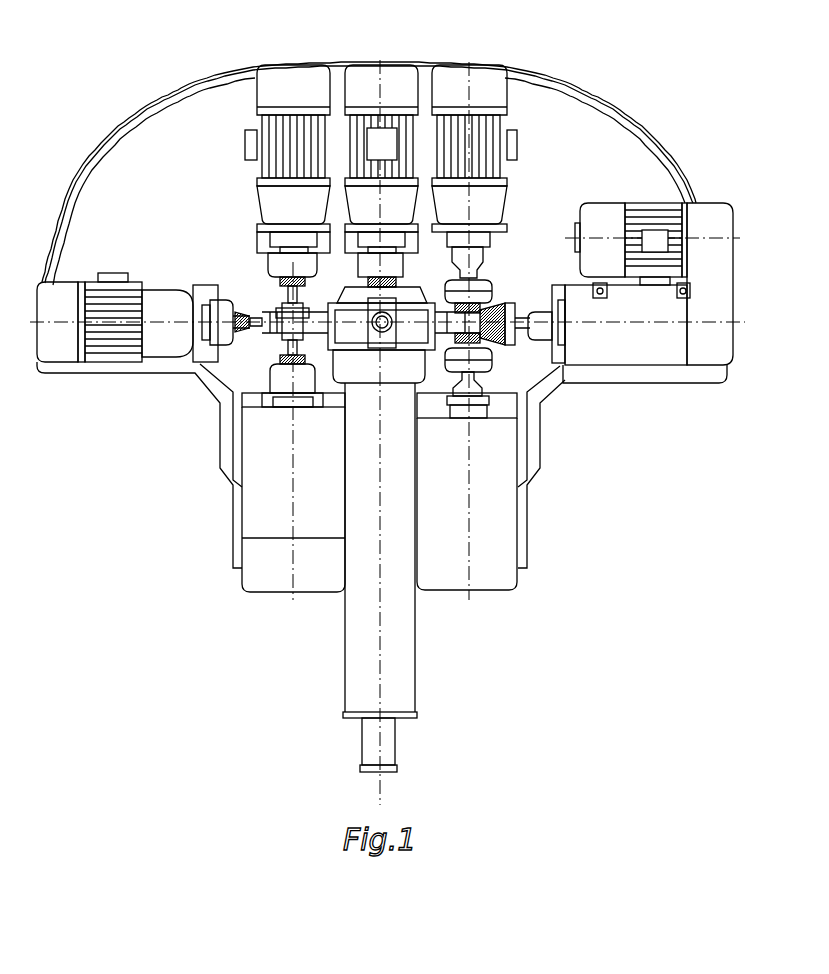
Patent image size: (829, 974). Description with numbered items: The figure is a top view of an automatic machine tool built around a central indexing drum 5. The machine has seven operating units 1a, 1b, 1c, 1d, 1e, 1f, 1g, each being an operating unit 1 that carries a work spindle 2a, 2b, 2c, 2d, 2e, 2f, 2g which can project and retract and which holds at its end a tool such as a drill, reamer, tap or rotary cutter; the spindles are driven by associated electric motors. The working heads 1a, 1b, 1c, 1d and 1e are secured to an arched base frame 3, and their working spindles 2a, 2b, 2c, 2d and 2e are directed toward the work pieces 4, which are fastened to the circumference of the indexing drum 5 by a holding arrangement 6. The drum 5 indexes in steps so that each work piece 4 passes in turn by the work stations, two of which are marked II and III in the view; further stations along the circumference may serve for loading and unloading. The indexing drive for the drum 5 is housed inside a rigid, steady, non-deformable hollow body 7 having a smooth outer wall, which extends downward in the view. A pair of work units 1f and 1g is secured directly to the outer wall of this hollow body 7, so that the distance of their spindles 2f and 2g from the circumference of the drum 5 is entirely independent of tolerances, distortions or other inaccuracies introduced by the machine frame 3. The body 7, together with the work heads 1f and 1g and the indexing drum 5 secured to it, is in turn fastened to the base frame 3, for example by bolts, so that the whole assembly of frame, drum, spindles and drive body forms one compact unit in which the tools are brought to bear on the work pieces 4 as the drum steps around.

The operating unit 1 is at (130, 288).
The operating unit 1a is at (62, 352).
The operating unit 1b is at (275, 82).
The operating unit 1c is at (365, 82).
The operating unit 1d is at (452, 78).
The operating unit 1e is at (660, 205).
The work unit 1f is at (503, 543).
The work unit 1g is at (258, 522).
The work spindle 2a is at (222, 348).
The work spindle 2b is at (282, 300).
The work spindle 2c is at (400, 284).
The work spindle 2d is at (492, 292).
The work spindle 2e is at (505, 345).
The work spindle 2f is at (482, 380).
The work spindle 2g is at (278, 352).
The base frame 3 is at (610, 147).
The work piece 4 is at (270, 322).
The indexing drum 5 is at (352, 300).
The holding arrangement 6 is at (310, 318).
The hollow body 7 is at (357, 642).
The work station II is at (380, 270).
The work station III is at (609, 314).